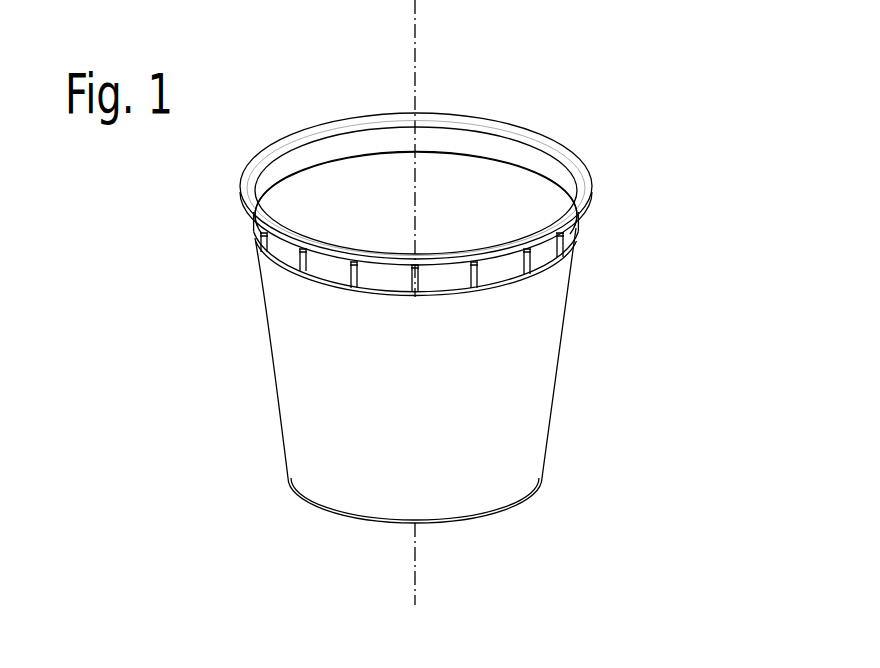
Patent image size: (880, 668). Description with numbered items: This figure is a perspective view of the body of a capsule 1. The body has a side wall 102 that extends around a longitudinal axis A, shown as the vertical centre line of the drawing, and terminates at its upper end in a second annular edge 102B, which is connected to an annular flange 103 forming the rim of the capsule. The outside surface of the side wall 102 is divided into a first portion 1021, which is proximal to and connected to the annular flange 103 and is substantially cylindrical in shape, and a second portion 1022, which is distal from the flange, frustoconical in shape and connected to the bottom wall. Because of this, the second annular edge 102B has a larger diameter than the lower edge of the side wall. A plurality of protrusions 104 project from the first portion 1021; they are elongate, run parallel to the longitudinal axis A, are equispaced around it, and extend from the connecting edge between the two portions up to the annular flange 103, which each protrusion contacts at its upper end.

The capsule 1 is at (436, 271).
The longitudinal axis A is at (417, 81).
The side wall 102 is at (472, 375).
The second annular edge 102B is at (512, 135).
The annular flange 103 is at (579, 188).
The protrusions 104 is at (356, 287).
The first portion 1021 is at (543, 253).
The second portion 1022 is at (492, 432).